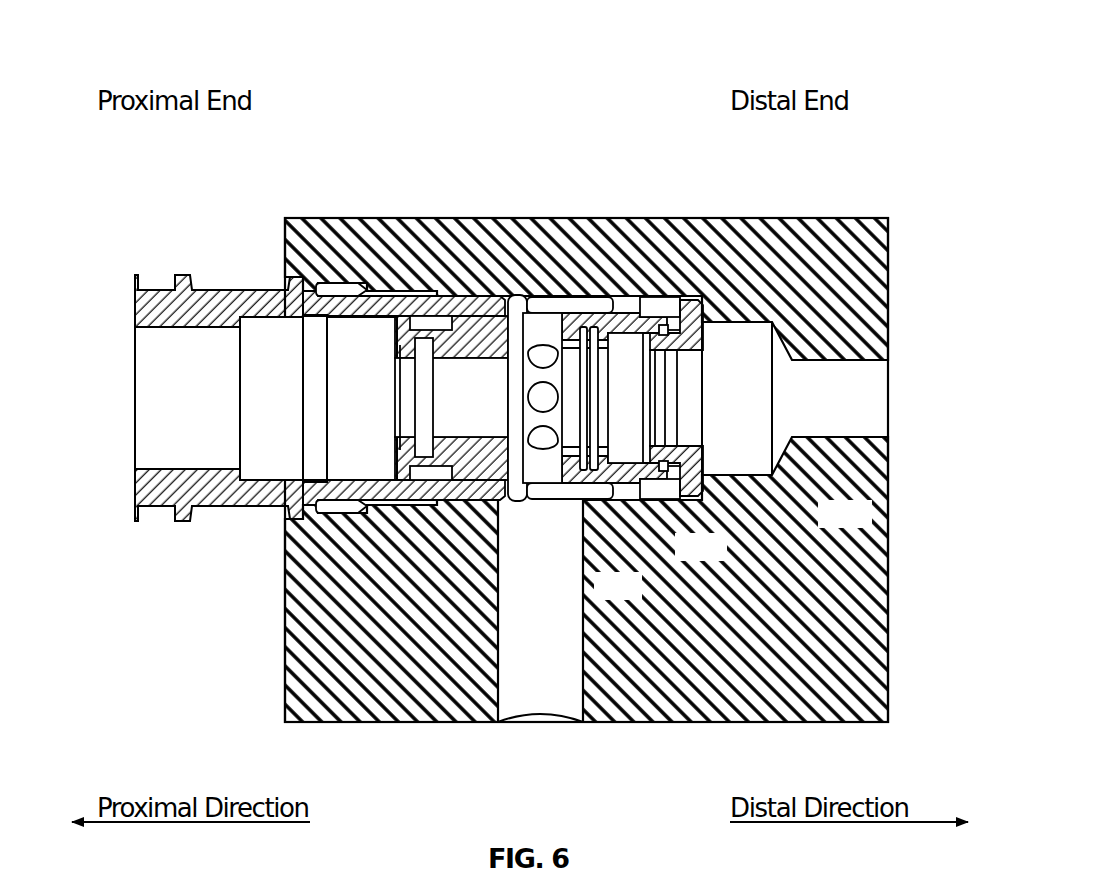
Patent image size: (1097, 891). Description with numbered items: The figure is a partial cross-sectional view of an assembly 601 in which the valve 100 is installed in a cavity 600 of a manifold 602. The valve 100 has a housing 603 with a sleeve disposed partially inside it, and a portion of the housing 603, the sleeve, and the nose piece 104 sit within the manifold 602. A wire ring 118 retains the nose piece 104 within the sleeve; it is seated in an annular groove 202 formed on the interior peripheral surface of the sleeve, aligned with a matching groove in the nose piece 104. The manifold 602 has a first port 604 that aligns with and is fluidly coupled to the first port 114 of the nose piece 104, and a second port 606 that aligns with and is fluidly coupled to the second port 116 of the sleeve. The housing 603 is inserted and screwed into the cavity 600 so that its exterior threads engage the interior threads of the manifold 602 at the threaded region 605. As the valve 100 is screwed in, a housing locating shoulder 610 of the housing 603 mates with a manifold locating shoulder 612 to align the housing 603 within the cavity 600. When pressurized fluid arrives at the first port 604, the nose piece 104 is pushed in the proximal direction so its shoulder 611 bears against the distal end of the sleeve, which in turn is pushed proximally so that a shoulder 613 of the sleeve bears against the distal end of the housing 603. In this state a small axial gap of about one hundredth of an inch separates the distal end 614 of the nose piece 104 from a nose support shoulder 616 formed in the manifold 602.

The valve 100 is at (266, 285).
The nose piece 104 is at (693, 298).
The first port 114 is at (713, 392).
The second port 116 is at (536, 501).
The wire ring 118 is at (672, 471).
The annular groove 202 is at (656, 461).
The cavity 600 is at (543, 297).
The assembly 601 is at (362, 90).
The manifold 602 is at (652, 212).
The housing 603 is at (158, 297).
The first port 604 is at (897, 405).
The threaded region 605 is at (407, 287).
The second port 606 is at (543, 726).
The housing locating shoulder 610 is at (305, 291).
The shoulder 611 is at (662, 303).
The manifold locating shoulder 612 is at (311, 280).
The shoulder 613 is at (508, 300).
The distal end 614 is at (712, 337).
The nose support shoulder 616 is at (710, 305).